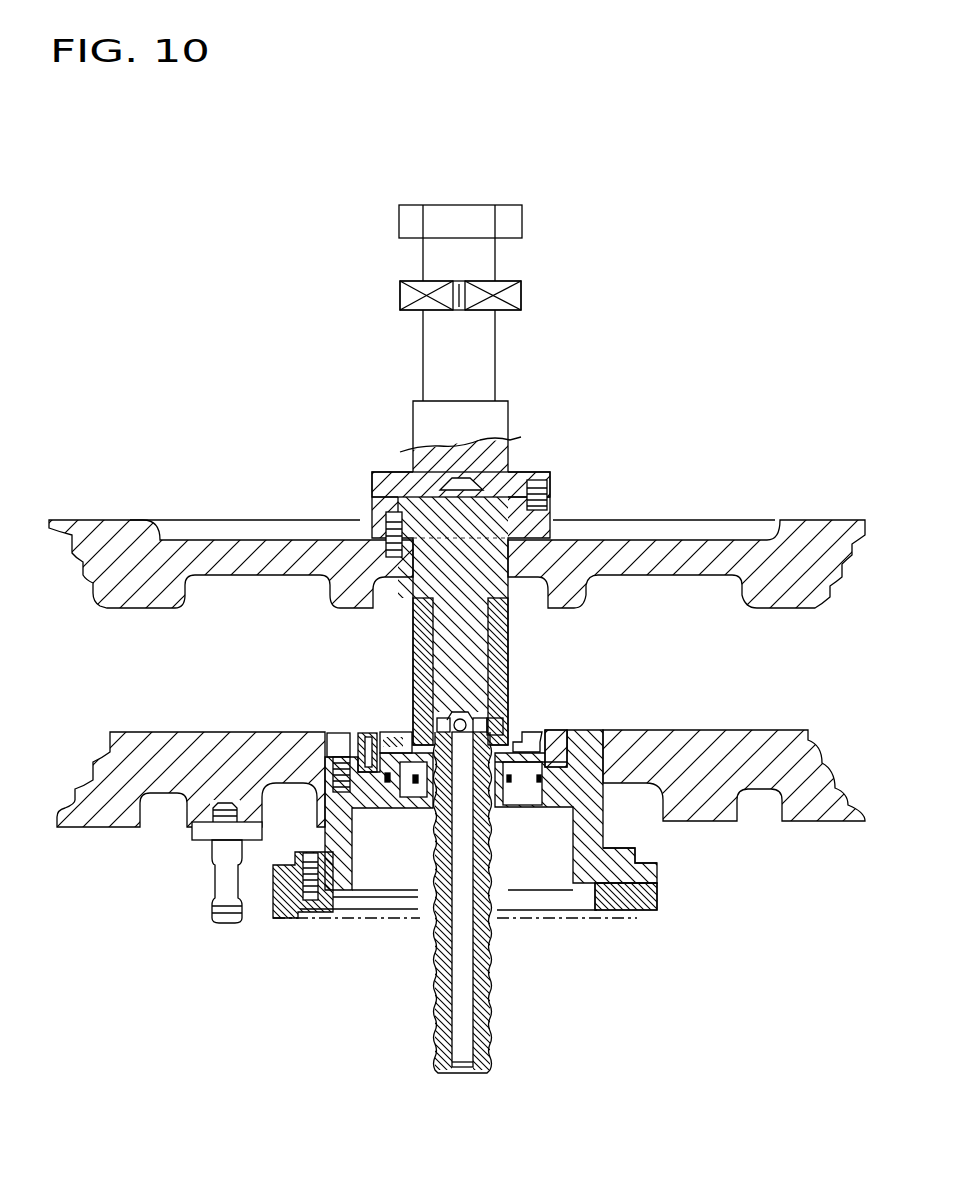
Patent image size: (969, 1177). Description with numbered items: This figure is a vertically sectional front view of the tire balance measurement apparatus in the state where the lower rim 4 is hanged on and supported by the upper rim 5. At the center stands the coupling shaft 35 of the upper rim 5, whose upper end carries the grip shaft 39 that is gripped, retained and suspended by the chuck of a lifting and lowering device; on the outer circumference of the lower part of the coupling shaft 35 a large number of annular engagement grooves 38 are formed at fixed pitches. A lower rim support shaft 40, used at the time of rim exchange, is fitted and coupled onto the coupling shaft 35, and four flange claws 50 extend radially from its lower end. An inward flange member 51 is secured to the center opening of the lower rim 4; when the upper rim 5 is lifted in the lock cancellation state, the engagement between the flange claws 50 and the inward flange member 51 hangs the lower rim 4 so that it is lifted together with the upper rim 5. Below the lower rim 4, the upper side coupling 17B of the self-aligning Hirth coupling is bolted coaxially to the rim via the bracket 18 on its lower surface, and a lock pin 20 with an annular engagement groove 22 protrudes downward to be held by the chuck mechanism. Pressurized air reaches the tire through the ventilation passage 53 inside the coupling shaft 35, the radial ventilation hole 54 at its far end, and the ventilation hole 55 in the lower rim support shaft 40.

The lower rim 4 is at (100, 825).
The upper rim 5 is at (95, 518).
The upper side coupling 17B is at (657, 907).
The bracket 18 is at (635, 856).
The lock pin 20 is at (212, 850).
The annular engagement groove 22 is at (209, 906).
The coupling shaft 35 is at (490, 823).
The annular engagement grooves 38 is at (510, 992).
The grip shaft 39 is at (497, 345).
The lower rim support shaft 40 is at (413, 639).
The flange claws 50 is at (397, 808).
The inward flange member 51 is at (398, 730).
The ventilation passage 53 is at (462, 1057).
The radial ventilation hole 54 is at (482, 717).
The ventilation hole 55 is at (505, 727).